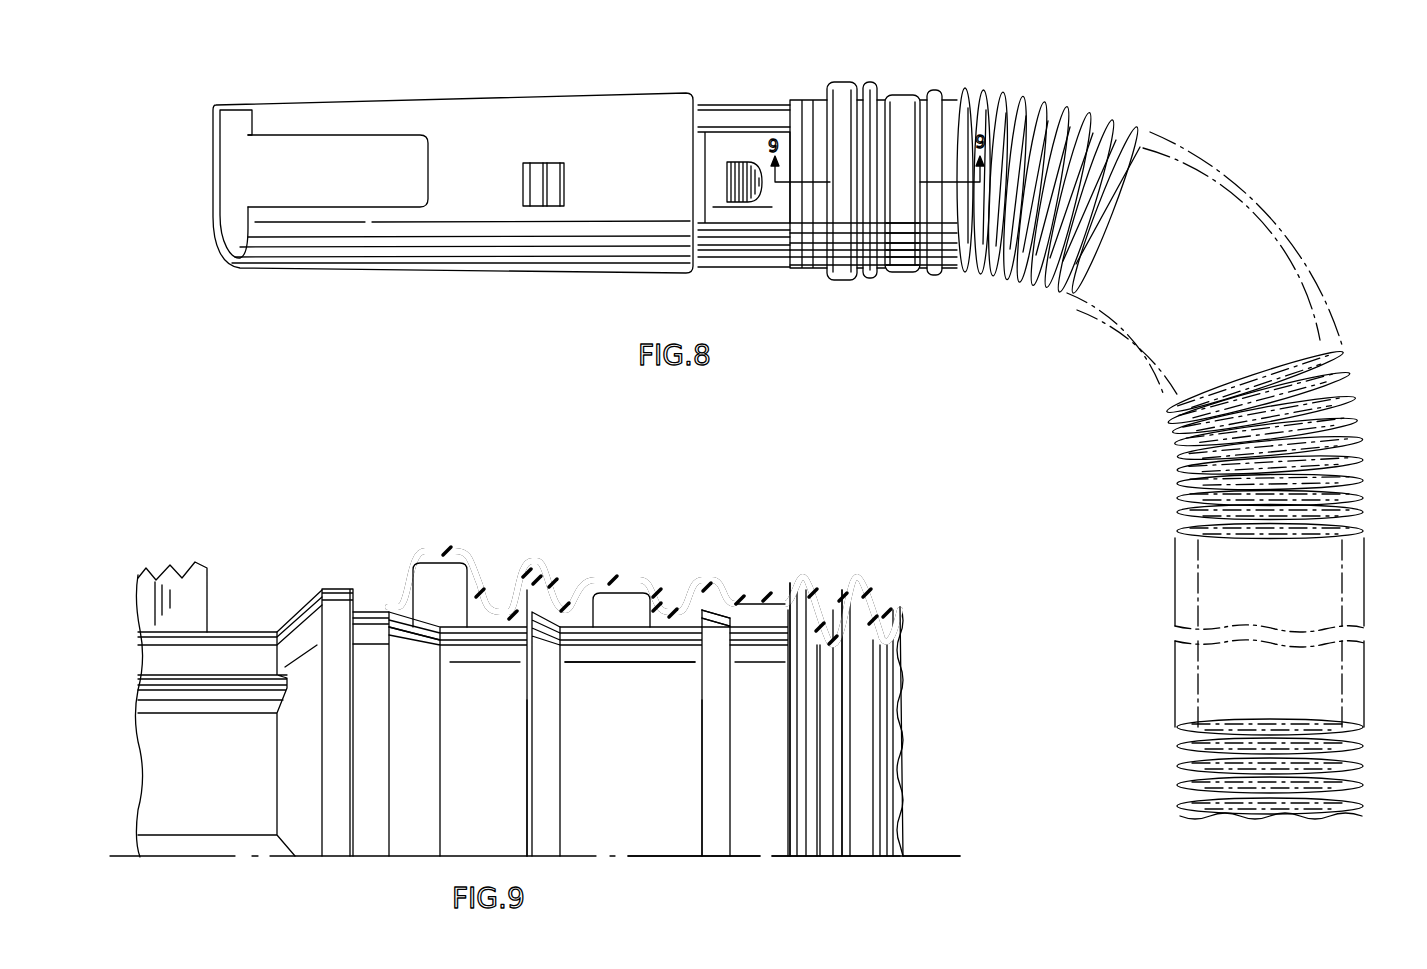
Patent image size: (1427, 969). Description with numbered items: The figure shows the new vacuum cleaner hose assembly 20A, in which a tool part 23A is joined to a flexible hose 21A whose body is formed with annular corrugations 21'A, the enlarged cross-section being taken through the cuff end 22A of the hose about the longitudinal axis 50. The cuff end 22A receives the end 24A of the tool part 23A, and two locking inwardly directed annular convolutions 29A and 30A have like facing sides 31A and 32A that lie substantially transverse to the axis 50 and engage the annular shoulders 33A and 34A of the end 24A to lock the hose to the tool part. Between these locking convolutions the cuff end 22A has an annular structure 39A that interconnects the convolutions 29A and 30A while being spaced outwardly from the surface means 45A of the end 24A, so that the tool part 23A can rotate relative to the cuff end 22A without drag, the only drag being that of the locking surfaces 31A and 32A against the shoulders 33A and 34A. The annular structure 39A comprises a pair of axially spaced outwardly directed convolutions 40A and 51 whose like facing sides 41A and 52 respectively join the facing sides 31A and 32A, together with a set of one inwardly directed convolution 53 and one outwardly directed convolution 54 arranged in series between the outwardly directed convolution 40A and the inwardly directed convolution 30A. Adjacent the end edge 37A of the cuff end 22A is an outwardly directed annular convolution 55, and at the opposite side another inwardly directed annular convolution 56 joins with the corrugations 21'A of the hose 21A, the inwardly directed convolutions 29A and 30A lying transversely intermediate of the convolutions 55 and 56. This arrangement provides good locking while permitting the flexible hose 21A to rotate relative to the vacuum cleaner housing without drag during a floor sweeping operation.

In FIG. 8, the vacuum cleaner hose assembly 20A is at (1262, 187).
In FIG. 9, the vacuum cleaner hose assembly 20A is at (850, 562).
In FIG. 8, the flexible hose 21A is at (1113, 120).
In FIG. 9, the flexible hose 21A is at (805, 577).
In FIG. 8, the annular corrugations 21'A is at (1285, 385).
In FIG. 9, the annular corrugations 21'A is at (891, 587).
In FIG. 8, the cuff end 22A is at (905, 95).
In FIG. 9, the cuff end 22A is at (645, 578).
In FIG. 8, the tool part 23A is at (420, 100).
In FIG. 9, the tool part 23A is at (150, 775).
In FIG. 9, the end of the tool part 24A is at (767, 840).
In FIG. 9, the inwardly directed annular convolution 29A is at (512, 625).
In FIG. 9, the inwardly directed annular convolution 30A is at (678, 640).
In FIG. 9, the facing side 31A is at (548, 583).
In FIG. 9, the facing side 32A is at (728, 598).
In FIG. 9, the annular shoulder 33A is at (527, 796).
In FIG. 9, the annular shoulder 34A is at (702, 770).
In FIG. 8, the end edge 37A is at (800, 100).
In FIG. 9, the end edge 37A is at (345, 589).
In FIG. 8, the annular structure 39A is at (898, 272).
In FIG. 9, the annular structure 39A is at (640, 580).
In FIG. 8, the outwardly directed annular convolution 40A is at (868, 82).
In FIG. 9, the outwardly directed annular convolution 40A is at (528, 560).
In FIG. 9, the facing side 41A is at (540, 580).
In FIG. 9, the surface means 45A is at (637, 838).
In FIG. 9, the longitudinal axis 50 is at (925, 852).
In FIG. 8, the outwardly directed annular convolution 51 is at (935, 92).
In FIG. 9, the outwardly directed annular convolution 51 is at (702, 582).
In FIG. 9, the facing side 52 is at (708, 588).
In FIG. 9, the inwardly directed annular convolution 53 is at (568, 606).
In FIG. 9, the outwardly directed annular convolution 54 is at (607, 578).
In FIG. 9, the outwardly directed annular convolution 55 is at (442, 548).
In FIG. 9, the inwardly directed annular convolution 56 is at (763, 597).